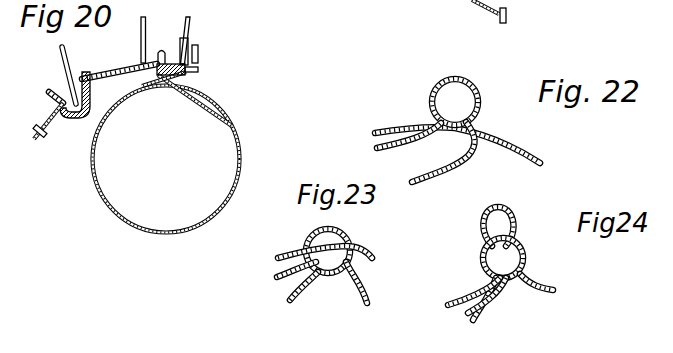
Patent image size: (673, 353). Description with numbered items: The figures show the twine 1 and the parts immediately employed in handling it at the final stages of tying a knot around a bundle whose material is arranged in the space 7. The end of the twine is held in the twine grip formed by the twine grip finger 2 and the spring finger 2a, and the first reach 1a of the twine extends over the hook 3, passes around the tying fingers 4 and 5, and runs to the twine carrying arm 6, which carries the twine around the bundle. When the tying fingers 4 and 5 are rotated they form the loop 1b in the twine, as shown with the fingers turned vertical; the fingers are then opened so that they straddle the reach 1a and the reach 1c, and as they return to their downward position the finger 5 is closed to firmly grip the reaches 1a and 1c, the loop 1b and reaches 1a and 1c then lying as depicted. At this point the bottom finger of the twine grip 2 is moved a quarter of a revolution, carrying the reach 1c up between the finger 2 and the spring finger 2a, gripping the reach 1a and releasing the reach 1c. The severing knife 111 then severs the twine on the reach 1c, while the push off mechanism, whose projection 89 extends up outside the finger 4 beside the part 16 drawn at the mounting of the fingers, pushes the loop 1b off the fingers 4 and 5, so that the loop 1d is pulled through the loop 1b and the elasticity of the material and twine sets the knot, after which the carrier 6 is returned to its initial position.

In FIG. 20, the twine 1 is at (241, 147).
In FIG. 20, the first reach of the twine 1a is at (116, 66).
In FIG. 22, the first reach of the twine 1a is at (400, 129).
In FIG. 23, the first reach of the twine 1a is at (293, 248).
In FIG. 24, the first reach of the twine 1a is at (477, 311).
In FIG. 22, the loop 1b is at (480, 95).
In FIG. 23, the loop 1b is at (350, 237).
In FIG. 24, the loop 1b is at (527, 256).
In FIG. 20, the reach of the twine 1c is at (101, 86).
In FIG. 22, the reach of the twine 1c is at (408, 150).
In FIG. 23, the reach of the twine 1c is at (360, 259).
In FIG. 24, the reach of the twine 1c is at (483, 307).
In FIG. 24, the loop 1d is at (515, 215).
In FIG. 20, the twine grip finger 2 is at (63, 82).
In FIG. 20, the spring finger 2a is at (66, 62).
In FIG. 20, the hook 3 is at (166, 41).
In FIG. 20, the tying finger 4 is at (195, 45).
In FIG. 20, the tying finger 5 is at (190, 25).
In FIG. 20, the twine carrying arm 6 is at (36, 141).
In FIG. 22, the twine carrying arm 6 is at (512, 16).
In FIG. 20, the space 7 is at (166, 159).
In FIG. 20, the block 16 is at (196, 68).
In FIG. 20, the projection of the push off finger 89 is at (199, 53).
In FIG. 20, the severing knife 111 is at (146, 28).